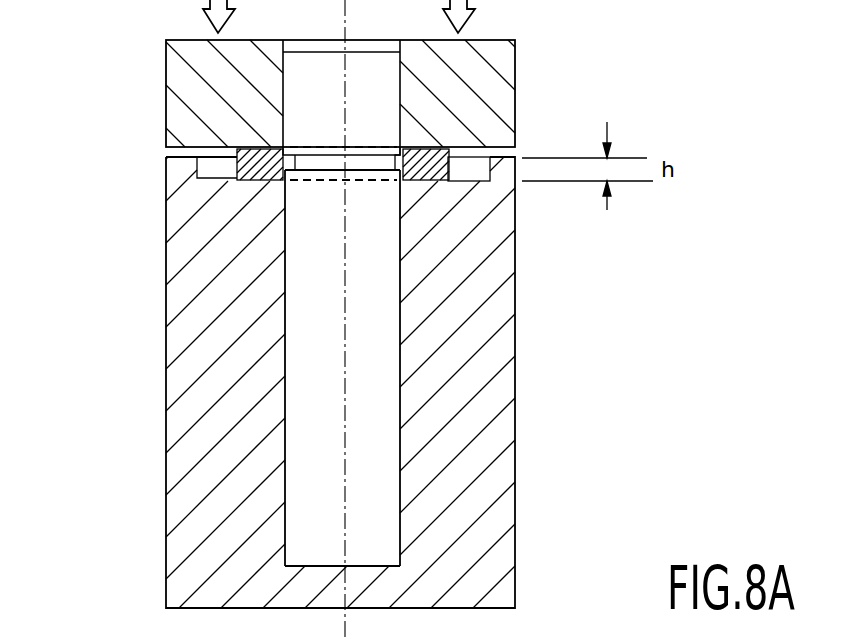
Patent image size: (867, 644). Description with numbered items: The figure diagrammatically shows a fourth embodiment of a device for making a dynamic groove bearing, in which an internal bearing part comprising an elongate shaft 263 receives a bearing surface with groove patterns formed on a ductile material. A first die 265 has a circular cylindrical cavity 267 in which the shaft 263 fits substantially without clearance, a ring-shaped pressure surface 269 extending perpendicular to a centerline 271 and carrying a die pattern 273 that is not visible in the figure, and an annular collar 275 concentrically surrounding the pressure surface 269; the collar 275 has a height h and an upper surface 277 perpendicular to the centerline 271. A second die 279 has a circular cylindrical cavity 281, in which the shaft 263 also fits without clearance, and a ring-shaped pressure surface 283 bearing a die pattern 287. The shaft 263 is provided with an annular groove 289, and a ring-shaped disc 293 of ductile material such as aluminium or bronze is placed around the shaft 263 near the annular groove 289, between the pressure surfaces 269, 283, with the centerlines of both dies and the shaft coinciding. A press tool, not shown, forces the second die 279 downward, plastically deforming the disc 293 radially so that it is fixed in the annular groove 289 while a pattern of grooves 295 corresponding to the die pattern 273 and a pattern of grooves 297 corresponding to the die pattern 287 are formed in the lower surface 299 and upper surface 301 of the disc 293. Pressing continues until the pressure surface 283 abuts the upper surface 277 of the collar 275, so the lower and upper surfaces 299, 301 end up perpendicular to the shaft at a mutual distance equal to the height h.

The elongate shaft 263 is at (383, 465).
The first die 265 is at (488, 301).
The circular cylindrical cavity 267 is at (403, 530).
The ring-shaped pressure surface 269 is at (473, 181).
The centerline 271 is at (345, 312).
The die pattern 273 is at (426, 164).
The annular collar 275 is at (182, 173).
The upper surface 277 is at (492, 157).
The second die 279 is at (183, 73).
The circular cylindrical cavity 281 is at (400, 80).
The ring-shaped pressure surface 283 is at (203, 146).
The die pattern 287 is at (240, 164).
The annular groove 289 is at (322, 162).
The ring-shaped disc 293 is at (403, 149).
The pattern of grooves 295 is at (420, 187).
The pattern of grooves 297 is at (430, 143).
The lower surface 299 is at (342, 175).
The upper surface 301 is at (397, 158).